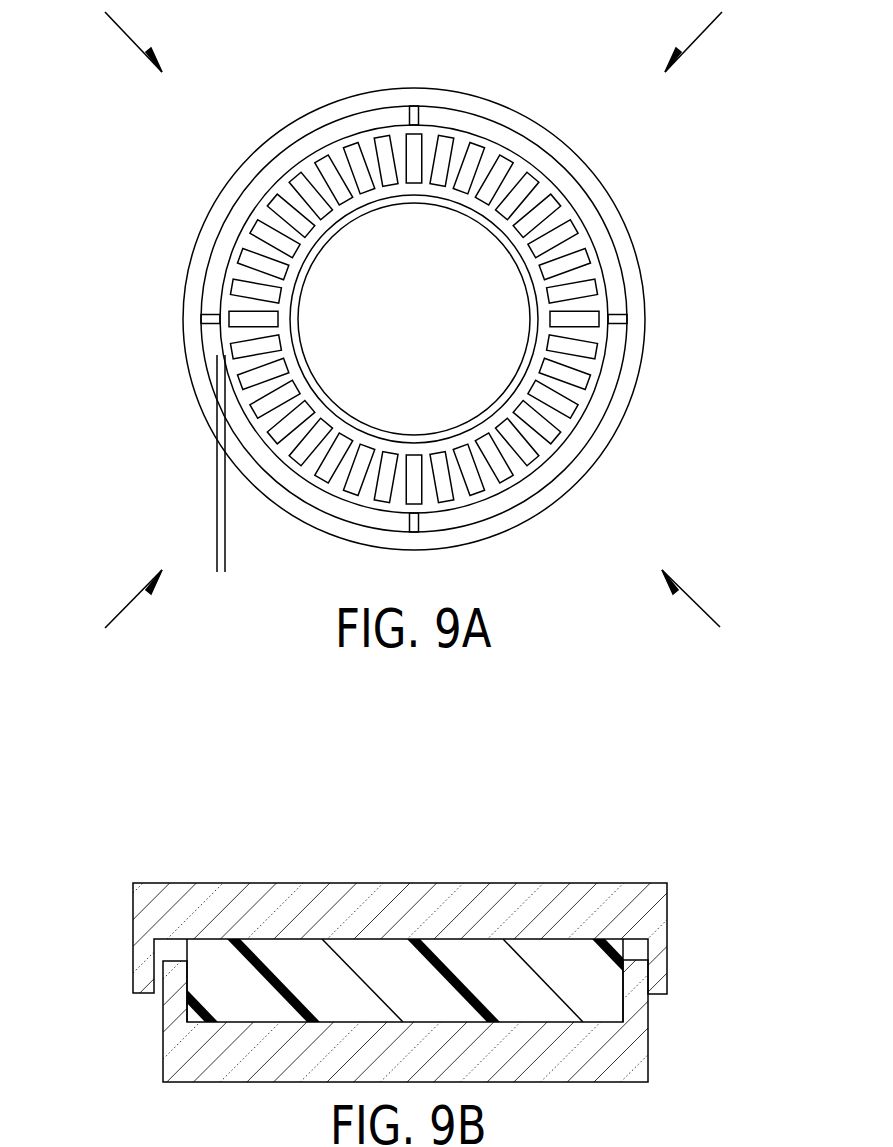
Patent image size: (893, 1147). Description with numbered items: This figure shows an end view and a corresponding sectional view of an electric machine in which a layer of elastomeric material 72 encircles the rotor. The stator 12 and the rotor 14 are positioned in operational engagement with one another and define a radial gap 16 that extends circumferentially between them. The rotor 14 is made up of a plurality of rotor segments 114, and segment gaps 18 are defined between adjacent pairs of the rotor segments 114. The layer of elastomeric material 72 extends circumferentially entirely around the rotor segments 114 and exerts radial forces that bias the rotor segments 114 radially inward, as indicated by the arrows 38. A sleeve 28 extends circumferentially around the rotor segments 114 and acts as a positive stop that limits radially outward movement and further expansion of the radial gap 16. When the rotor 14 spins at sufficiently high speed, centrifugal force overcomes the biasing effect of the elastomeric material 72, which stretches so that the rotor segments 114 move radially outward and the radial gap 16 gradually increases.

In FIG. 9A, the stator 12 is at (452, 165).
In FIG. 9A, the rotor 14 is at (606, 249).
In FIG. 9A, the radial gap 16 is at (180, 560).
In FIG. 9A, the segment gaps 18 is at (410, 115).
In FIG. 9B, the sleeve 28 is at (385, 910).
In FIG. 9A, the arrows 38 is at (125, 33).
In FIG. 9A, the layer of elastomeric material 72 is at (303, 128).
In FIG. 9B, the layer of elastomeric material 72 is at (595, 996).
In FIG. 9A, the rotor segments 114 is at (250, 197).
In FIG. 9B, the rotor segments 114 is at (330, 1060).